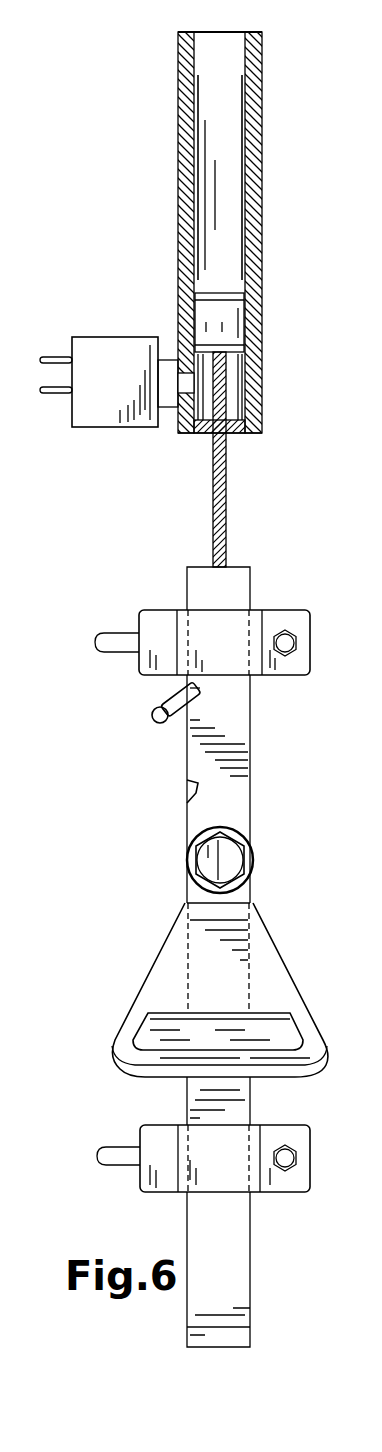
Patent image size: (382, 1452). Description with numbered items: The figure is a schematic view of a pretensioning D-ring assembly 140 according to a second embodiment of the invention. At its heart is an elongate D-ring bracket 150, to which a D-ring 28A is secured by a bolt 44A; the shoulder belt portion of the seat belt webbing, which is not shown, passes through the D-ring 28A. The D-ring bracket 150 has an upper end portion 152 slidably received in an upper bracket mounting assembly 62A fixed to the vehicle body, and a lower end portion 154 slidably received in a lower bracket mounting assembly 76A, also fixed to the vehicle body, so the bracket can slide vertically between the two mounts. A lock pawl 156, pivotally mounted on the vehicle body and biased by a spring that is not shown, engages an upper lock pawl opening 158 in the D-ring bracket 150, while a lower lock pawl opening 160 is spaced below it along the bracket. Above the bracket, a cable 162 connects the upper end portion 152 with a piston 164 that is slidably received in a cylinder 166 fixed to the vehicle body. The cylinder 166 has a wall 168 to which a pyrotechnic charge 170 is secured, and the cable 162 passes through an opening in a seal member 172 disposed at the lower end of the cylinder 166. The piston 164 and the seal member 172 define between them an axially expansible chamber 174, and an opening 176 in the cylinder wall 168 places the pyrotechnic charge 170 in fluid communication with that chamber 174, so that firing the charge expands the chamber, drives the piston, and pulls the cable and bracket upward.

The pretensioning D-ring assembly 140 is at (92, 542).
The cylinder 166 is at (275, 110).
The wall 168 is at (178, 178).
The piston 164 is at (228, 328).
The axially expansible chamber 174 is at (235, 380).
The seal member 172 is at (237, 431).
The cable 162 is at (227, 493).
The pyrotechnic charge 170 is at (137, 428).
The opening 176 is at (185, 393).
The D-ring bracket 150 is at (262, 810).
The upper end portion 152 is at (250, 572).
The lower end portion 154 is at (250, 1337).
The upper bracket mounting assembly 62A is at (272, 608).
The lower bracket mounting assembly 76A is at (267, 1192).
The lock pawl 156 is at (165, 700).
The upper lock pawl opening 158 is at (196, 688).
The lower lock pawl opening 160 is at (197, 785).
The bolt 44A is at (197, 867).
The D-ring 28A is at (163, 982).